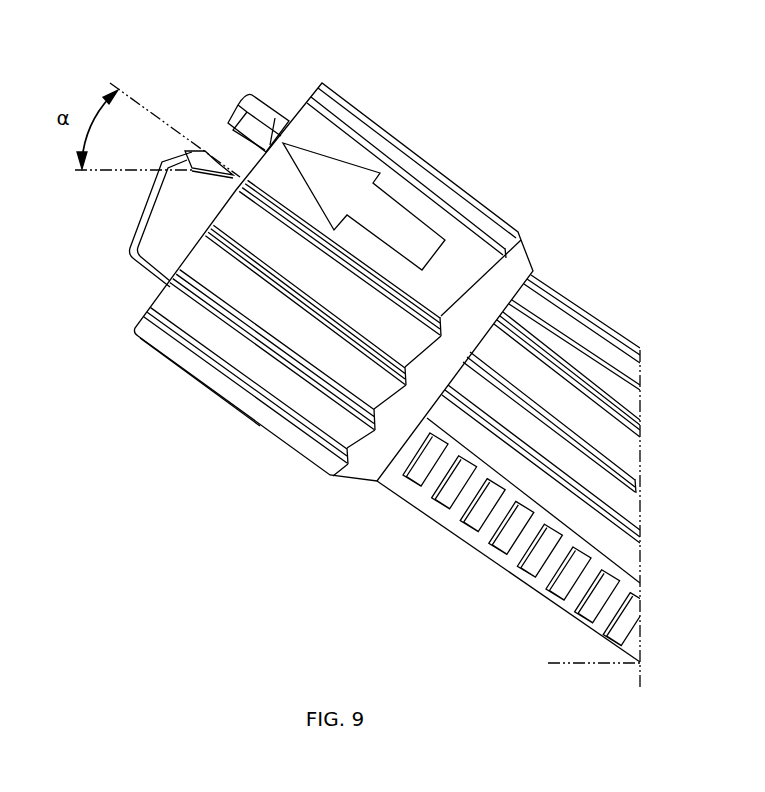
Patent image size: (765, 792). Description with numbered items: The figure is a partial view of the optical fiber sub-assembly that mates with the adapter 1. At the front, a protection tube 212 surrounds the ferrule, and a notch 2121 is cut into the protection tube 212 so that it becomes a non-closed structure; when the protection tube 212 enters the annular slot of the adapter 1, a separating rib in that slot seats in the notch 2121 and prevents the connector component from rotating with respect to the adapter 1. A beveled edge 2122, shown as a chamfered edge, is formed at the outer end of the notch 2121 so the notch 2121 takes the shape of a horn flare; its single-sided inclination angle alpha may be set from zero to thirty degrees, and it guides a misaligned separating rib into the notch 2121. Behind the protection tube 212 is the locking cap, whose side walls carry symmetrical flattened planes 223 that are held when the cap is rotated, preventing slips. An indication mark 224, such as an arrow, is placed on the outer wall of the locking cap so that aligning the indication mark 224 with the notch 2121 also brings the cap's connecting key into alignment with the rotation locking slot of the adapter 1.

The adapter 1 is at (240, 404).
The protection tube 212 is at (174, 246).
The notch 2121 is at (239, 153).
The beveled edge 2122 is at (208, 168).
The flattened planes 223 is at (468, 495).
The indication mark 224 is at (348, 188).